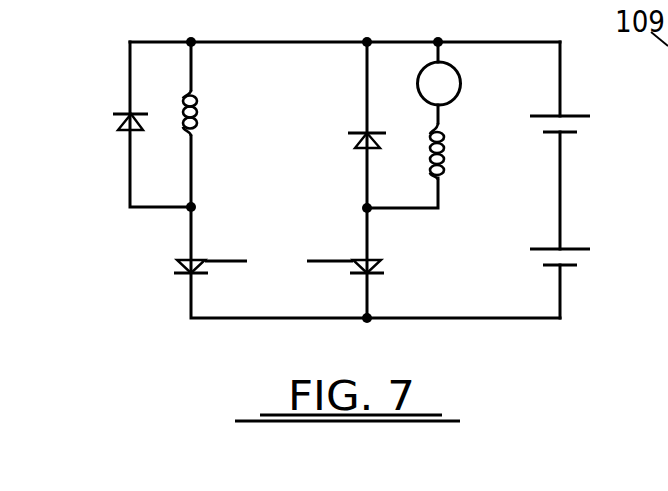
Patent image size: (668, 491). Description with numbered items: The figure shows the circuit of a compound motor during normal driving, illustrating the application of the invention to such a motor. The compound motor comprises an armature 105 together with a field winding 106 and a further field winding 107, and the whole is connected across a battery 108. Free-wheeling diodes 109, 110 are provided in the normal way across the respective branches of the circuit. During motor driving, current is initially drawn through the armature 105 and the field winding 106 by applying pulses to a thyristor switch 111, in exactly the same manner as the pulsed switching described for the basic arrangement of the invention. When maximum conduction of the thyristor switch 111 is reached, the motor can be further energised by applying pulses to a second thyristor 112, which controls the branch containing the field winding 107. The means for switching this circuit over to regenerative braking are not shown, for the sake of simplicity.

The armature 105 is at (440, 90).
The field winding 106 is at (438, 167).
The field winding 107 is at (198, 118).
The battery 108 is at (572, 192).
The free-wheeling diode 109 is at (128, 123).
The free-wheeling diode 110 is at (358, 143).
The thyristor switch 111 is at (358, 258).
The second thyristor 112 is at (177, 261).